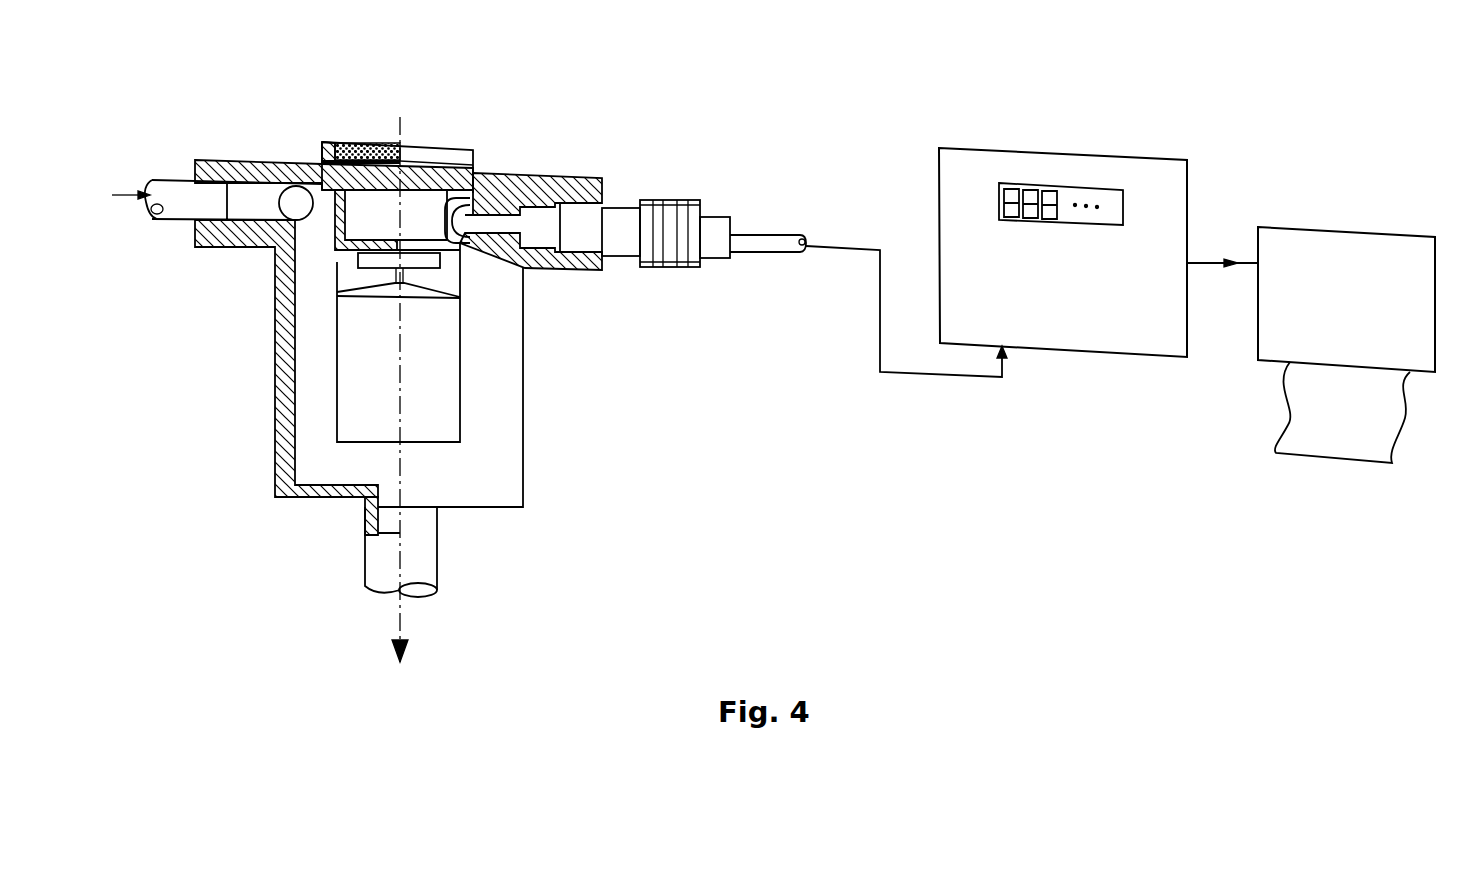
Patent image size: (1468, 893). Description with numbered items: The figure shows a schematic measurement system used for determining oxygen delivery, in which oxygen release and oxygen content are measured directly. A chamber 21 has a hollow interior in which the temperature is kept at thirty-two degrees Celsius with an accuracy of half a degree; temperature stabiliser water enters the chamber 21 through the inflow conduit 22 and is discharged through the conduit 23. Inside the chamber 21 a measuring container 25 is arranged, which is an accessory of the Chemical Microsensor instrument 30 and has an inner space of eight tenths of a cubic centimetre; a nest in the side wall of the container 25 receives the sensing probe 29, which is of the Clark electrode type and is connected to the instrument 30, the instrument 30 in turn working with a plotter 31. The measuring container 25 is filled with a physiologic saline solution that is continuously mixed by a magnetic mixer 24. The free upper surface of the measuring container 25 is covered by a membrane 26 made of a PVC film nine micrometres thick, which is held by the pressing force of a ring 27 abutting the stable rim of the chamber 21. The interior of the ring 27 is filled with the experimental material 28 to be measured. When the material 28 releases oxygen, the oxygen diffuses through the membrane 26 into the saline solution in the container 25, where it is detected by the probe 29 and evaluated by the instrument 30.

The chamber 21 is at (222, 160).
The inflow conduit 22 is at (175, 207).
The conduit 23 is at (373, 559).
The magnetic mixer 24 is at (423, 300).
The measuring container 25 is at (320, 181).
The membrane 26 is at (478, 171).
The ring 27 is at (331, 142).
The experimental material 28 is at (367, 150).
The sensing probe 29 is at (628, 248).
The Chemical Microsensor instrument 30 is at (1097, 330).
The plotter 31 is at (1281, 334).